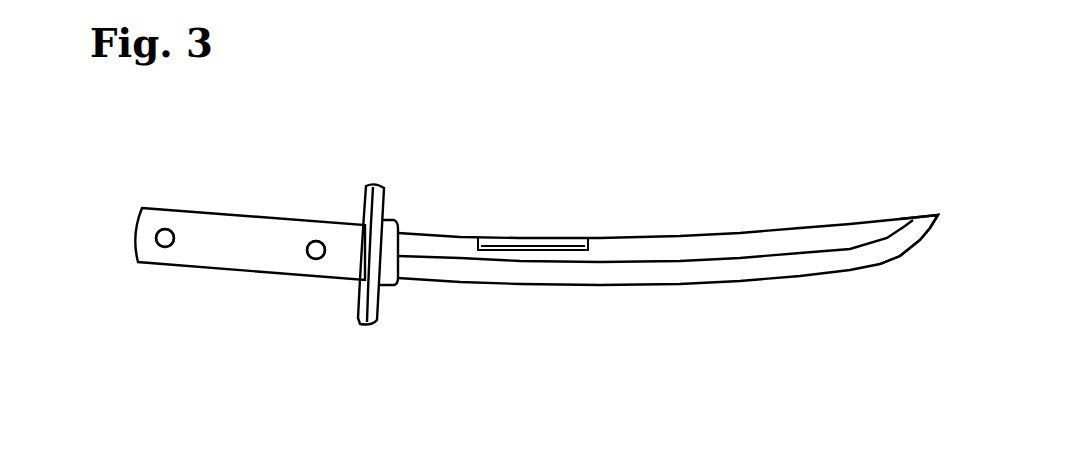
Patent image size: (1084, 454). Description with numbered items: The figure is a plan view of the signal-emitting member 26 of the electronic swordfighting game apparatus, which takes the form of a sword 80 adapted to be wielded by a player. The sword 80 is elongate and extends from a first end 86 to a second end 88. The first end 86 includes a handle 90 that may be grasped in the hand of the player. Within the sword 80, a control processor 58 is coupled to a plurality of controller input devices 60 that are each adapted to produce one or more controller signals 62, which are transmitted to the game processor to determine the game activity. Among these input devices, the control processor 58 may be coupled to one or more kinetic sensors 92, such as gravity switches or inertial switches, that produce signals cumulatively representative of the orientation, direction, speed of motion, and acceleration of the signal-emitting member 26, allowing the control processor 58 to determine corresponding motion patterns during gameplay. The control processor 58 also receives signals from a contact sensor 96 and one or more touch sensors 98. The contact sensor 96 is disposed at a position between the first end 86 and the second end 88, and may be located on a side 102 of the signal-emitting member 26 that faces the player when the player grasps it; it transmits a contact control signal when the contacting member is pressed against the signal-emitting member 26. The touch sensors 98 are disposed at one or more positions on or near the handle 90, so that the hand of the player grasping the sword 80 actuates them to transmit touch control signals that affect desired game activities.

The signal-emitting member 26 is at (797, 80).
The control processor 58 is at (395, 222).
The controller input devices 60 is at (176, 243).
The controller signals 62 is at (345, 233).
The sword 80 is at (677, 103).
The first end 86 is at (127, 263).
The second end 88 is at (896, 279).
The handle 90 is at (240, 215).
The kinetic sensors 92 is at (855, 245).
The contact sensor 96 is at (517, 237).
The touch sensors 98 is at (130, 240).
The side 102 is at (660, 231).